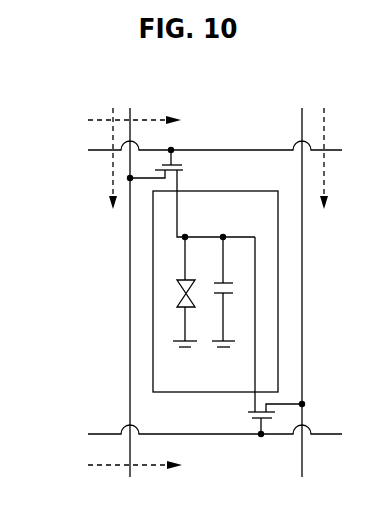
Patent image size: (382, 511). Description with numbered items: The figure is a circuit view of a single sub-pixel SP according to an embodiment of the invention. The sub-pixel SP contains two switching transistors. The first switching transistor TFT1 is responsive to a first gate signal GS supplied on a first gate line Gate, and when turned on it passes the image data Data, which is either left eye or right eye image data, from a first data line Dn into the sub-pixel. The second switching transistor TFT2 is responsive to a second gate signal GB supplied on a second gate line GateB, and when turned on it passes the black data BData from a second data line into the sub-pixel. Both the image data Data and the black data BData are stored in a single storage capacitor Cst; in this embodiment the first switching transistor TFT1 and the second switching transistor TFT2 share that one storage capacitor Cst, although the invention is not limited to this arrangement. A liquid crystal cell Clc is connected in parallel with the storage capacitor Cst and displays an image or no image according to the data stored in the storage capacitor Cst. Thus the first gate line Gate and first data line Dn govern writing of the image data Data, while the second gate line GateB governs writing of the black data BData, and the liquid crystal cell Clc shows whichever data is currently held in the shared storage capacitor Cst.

The first switching transistor TFT1 is at (180, 192).
The second switching transistor TFT2 is at (248, 337).
The liquid crystal cell Clc is at (175, 292).
The storage capacitor Cst is at (233, 292).
The sub-pixel SP is at (65, 303).
The first data line Dn is at (128, 281).
The first gate line Gate is at (190, 150).
The second gate line GateB is at (184, 436).
The first gate signal GS is at (148, 121).
The second gate signal GB is at (149, 466).
The image data Data is at (111, 185).
The black data BData is at (323, 190).